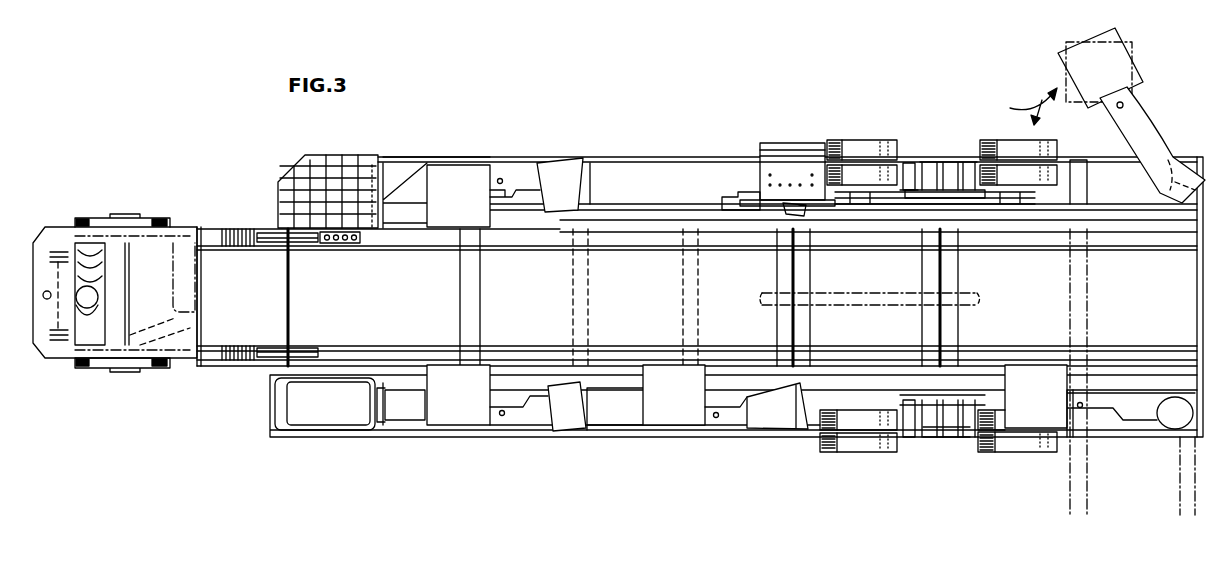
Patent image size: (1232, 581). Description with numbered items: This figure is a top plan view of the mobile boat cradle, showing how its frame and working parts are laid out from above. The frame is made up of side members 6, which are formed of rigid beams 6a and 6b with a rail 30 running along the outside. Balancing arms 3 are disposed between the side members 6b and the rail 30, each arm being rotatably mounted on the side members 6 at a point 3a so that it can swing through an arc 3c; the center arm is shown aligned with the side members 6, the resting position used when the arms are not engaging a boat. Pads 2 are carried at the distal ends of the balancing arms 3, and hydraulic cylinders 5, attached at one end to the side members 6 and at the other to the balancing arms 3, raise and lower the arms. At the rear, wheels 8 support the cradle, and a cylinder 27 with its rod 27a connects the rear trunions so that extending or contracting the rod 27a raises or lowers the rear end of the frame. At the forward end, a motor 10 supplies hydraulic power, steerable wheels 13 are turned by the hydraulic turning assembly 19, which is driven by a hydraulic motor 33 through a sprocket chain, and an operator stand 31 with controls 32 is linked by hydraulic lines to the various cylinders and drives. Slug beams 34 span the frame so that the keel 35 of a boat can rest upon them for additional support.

The pads 2 is at (470, 172).
The balancing arms 3 is at (568, 160).
The point 3a is at (1178, 152).
The arc 3c is at (1023, 104).
The hydraulic cylinders 5 is at (748, 196).
The side members 6 is at (473, 160).
The rigid beam 6a is at (410, 242).
The rigid beam 6b is at (407, 205).
The wheels 8 is at (870, 143).
The motor 10 is at (340, 412).
The wheels 13 is at (92, 222).
The hydraulic turning assembly 19 is at (84, 300).
The cylinder 27 is at (948, 185).
The rod 27a is at (911, 168).
The rail 30 is at (540, 165).
The operator stand 31 is at (320, 192).
The controls 32 is at (392, 232).
The hydraulic motor 33 is at (78, 243).
The slug beams 34 is at (473, 301).
The keel 35 is at (890, 278).